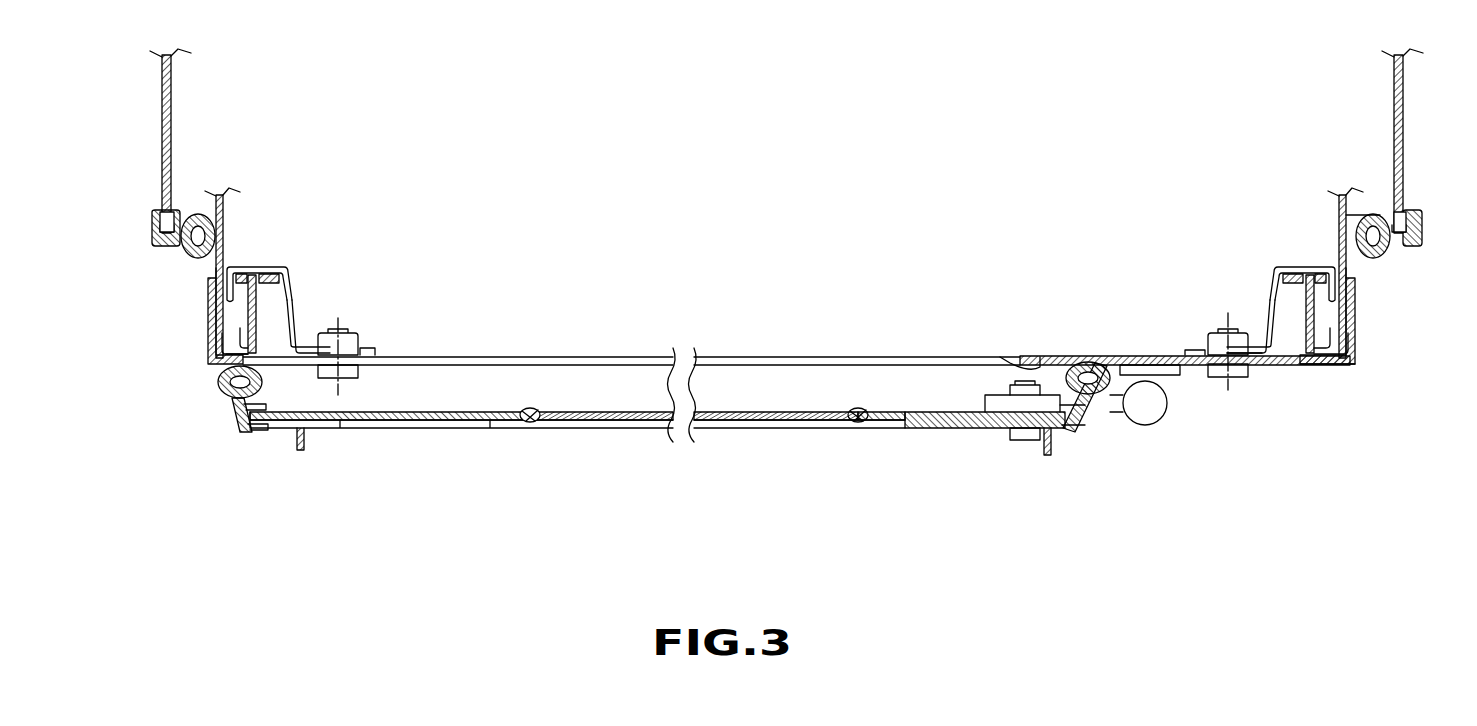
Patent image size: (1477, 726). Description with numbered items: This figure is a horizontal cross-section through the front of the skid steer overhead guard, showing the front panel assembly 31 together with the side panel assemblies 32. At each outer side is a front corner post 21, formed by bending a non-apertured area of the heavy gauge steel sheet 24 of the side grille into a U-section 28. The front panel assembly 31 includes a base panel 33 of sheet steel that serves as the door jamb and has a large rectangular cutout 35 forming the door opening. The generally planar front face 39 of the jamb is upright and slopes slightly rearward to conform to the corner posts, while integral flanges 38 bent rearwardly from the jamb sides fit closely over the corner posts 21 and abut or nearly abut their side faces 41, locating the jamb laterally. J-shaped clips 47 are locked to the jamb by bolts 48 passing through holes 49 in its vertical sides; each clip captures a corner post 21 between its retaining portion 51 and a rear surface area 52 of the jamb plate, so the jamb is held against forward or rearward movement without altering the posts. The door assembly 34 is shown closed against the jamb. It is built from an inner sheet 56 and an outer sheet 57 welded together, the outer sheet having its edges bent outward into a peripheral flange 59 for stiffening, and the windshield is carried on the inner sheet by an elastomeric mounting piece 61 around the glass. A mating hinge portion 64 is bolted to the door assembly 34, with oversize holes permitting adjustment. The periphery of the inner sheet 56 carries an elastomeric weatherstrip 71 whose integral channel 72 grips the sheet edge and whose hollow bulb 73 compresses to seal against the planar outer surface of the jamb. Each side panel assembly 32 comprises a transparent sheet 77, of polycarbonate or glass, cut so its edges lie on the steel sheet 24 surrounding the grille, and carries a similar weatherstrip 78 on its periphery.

The front corner post 21 is at (252, 298).
The steel sheet 24 is at (224, 206).
The U-section 28 is at (240, 333).
The front panel assembly 31 is at (1190, 368).
The side panel assembly 32 is at (184, 88).
The base panel 33 is at (1308, 366).
The door assembly 34 is at (445, 430).
The cutout 35 is at (1008, 356).
The flange 38 is at (210, 305).
The front face 39 is at (1010, 363).
The face 41 is at (216, 272).
The J-shaped clip 47 is at (298, 332).
The bolt 48 is at (350, 376).
The hole 49 is at (372, 349).
The retaining portion 51 is at (268, 262).
The rear surface area 52 is at (270, 348).
The inner sheet 56 is at (900, 422).
The outer sheet 57 is at (968, 430).
The peripheral flange 59 is at (306, 440).
The elastomeric mounting piece 61 is at (852, 410).
The mating hinge portion 64 is at (1150, 425).
The weatherstrip 71 is at (225, 388).
The channel 72 is at (262, 436).
The hollow bulb 73 is at (1078, 372).
The transparent sheet 77 is at (170, 128).
The weatherstrip 78 is at (1365, 225).